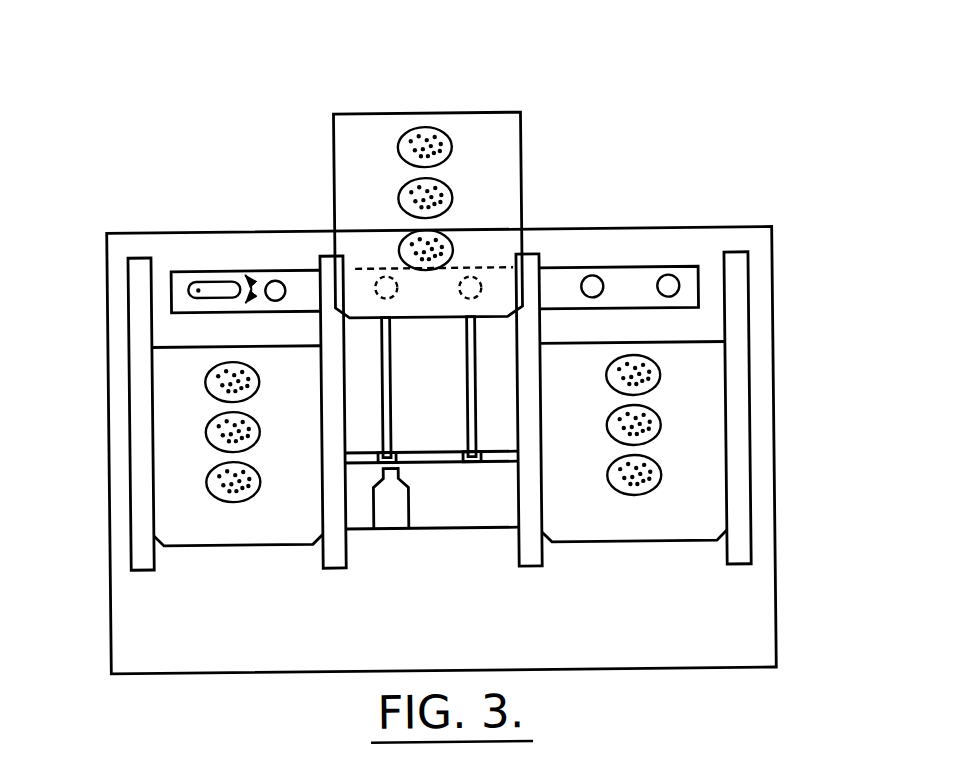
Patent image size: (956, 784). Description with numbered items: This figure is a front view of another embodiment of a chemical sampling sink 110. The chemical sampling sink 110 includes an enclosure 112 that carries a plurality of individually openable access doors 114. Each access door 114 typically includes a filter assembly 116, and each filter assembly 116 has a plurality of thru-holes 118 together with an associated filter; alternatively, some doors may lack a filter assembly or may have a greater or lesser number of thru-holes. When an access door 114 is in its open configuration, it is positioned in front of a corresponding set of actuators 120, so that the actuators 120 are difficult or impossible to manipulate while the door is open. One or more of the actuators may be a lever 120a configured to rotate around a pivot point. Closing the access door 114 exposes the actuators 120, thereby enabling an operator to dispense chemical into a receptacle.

The chemical sampling sink 110 is at (774, 91).
The enclosure 112 is at (776, 293).
The access door 114 is at (494, 113).
The filter assembly 116 is at (468, 190).
The thru-holes 118 is at (413, 130).
The actuators 120 is at (675, 279).
The lever 120a is at (219, 280).